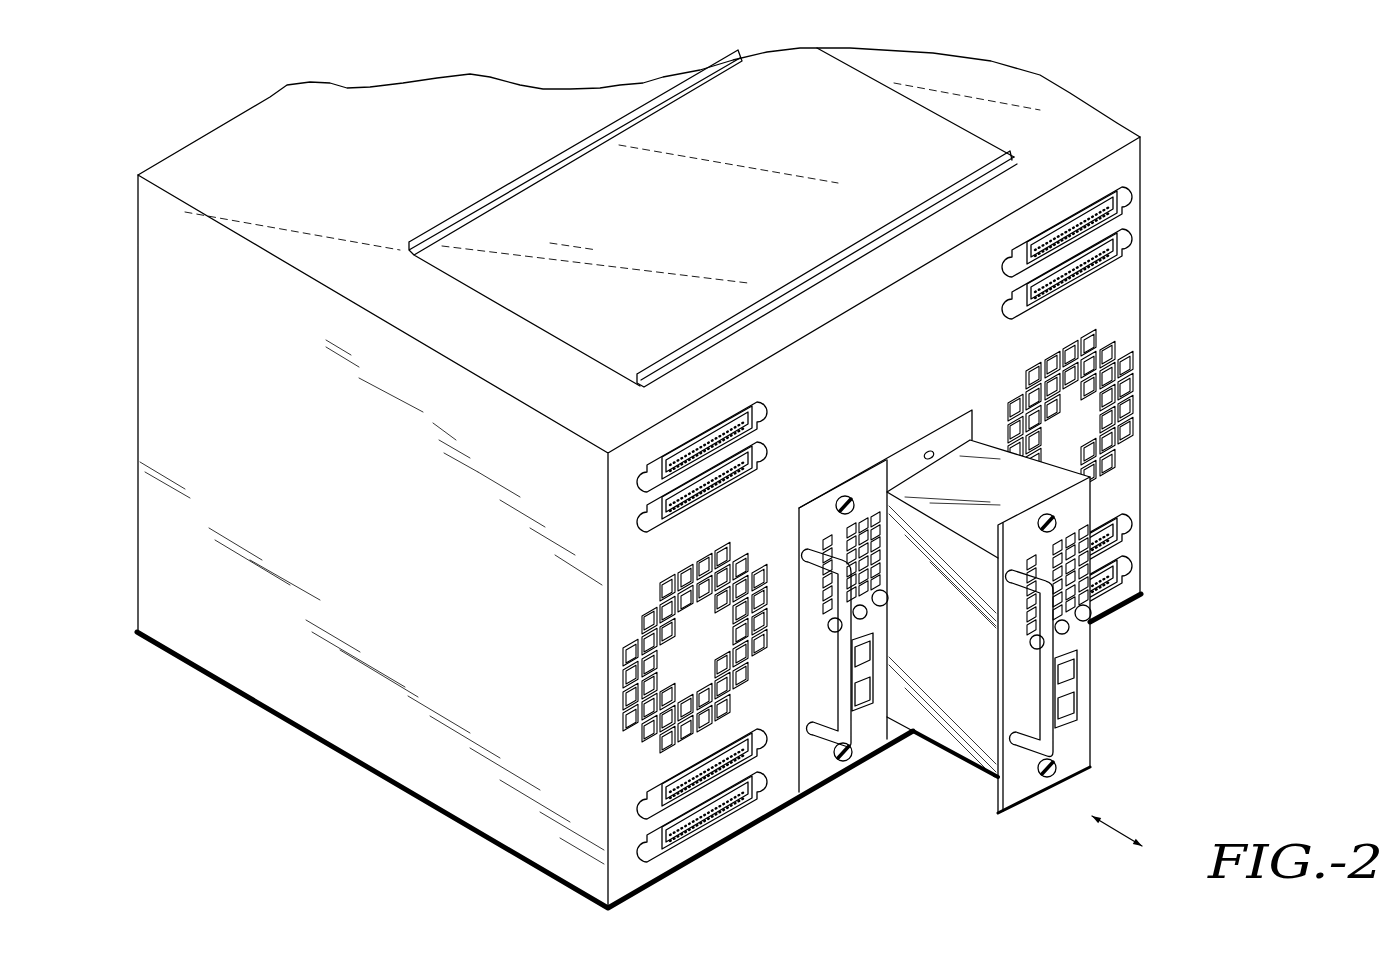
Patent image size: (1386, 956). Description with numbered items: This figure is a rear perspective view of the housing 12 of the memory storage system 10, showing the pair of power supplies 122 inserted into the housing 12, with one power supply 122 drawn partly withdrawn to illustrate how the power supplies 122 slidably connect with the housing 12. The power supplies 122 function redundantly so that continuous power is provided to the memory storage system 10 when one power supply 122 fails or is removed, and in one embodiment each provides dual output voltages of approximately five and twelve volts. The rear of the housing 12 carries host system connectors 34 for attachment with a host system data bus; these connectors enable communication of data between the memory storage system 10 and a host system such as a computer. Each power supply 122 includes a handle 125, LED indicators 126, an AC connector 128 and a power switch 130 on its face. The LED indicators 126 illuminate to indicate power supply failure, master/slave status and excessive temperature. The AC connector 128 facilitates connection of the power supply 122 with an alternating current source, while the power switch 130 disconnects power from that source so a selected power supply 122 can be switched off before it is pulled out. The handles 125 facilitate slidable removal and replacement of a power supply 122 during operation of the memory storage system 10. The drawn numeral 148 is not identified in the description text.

The memory storage system 10 is at (1074, 70).
The housing 12 is at (1097, 136).
The host system connectors 34 is at (1122, 528).
The power supply 122 is at (863, 750).
The handle 125 is at (830, 731).
The LED indicators 126 is at (1090, 620).
The AC connector 128 is at (1080, 728).
The power switch 130 is at (1080, 690).
The connector 148 is at (872, 676).